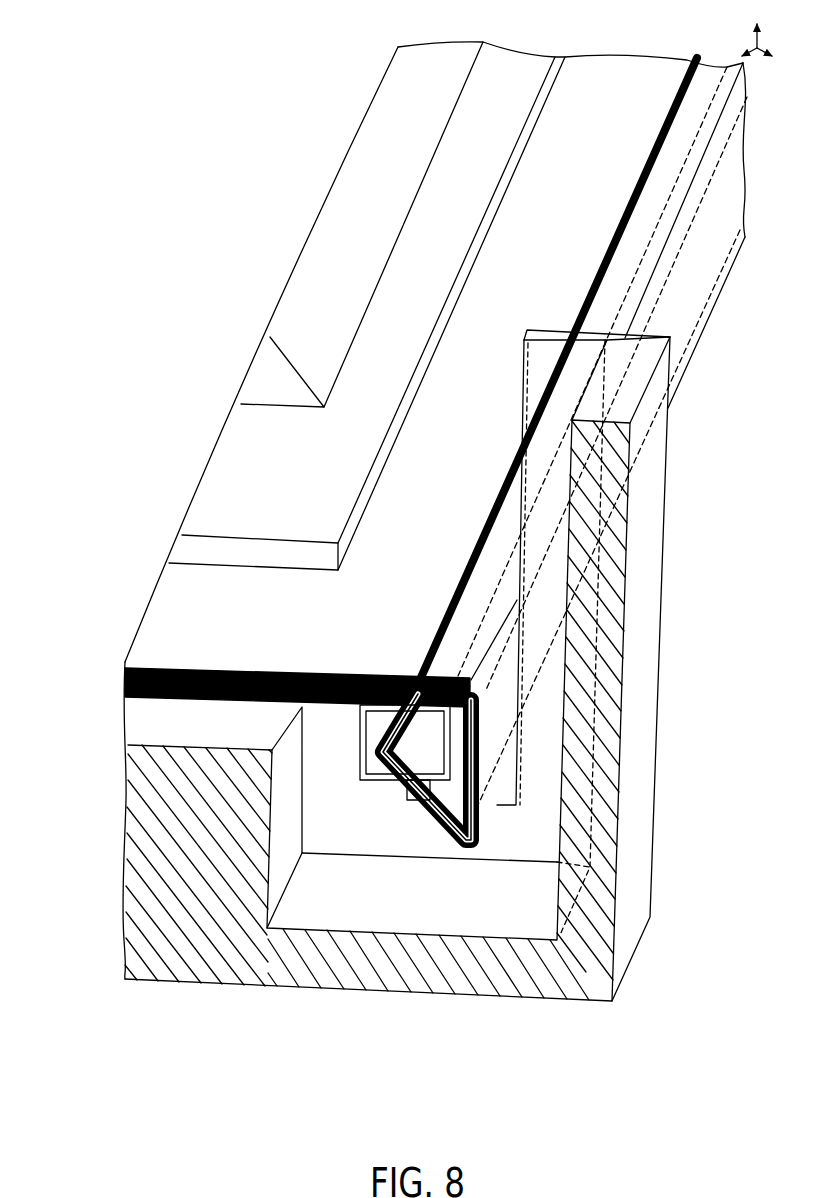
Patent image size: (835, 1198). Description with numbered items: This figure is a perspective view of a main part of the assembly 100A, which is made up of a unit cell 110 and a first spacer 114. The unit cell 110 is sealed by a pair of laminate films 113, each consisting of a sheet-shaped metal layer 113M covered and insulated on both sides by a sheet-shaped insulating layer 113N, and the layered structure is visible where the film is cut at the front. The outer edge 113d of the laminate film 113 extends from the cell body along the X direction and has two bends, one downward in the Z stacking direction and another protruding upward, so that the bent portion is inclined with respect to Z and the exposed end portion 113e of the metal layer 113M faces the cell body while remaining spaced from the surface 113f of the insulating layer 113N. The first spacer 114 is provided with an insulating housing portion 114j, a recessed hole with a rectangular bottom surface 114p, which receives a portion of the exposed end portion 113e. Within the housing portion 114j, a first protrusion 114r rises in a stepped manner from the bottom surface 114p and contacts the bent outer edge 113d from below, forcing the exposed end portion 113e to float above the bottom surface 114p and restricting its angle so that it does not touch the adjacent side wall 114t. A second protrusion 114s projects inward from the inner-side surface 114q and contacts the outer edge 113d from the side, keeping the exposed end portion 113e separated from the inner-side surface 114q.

The assembly 100A is at (118, 58).
The unit cell 110 is at (380, 60).
The laminate film 113 is at (164, 648).
The outer edge 113d is at (515, 608).
The surface of the insulating layer 113f is at (408, 600).
The metal layer 113M is at (124, 683).
The insulating layer 113N is at (124, 668).
The exposed end portion 113e is at (700, 810).
The first spacer 114 is at (640, 943).
The inner-side surface 114q is at (585, 648).
The second protrusion 114s is at (432, 800).
The side wall 114t is at (548, 764).
The first protrusion 114r is at (462, 768).
The bottom surface 114p is at (470, 905).
The housing portion 114j is at (358, 900).